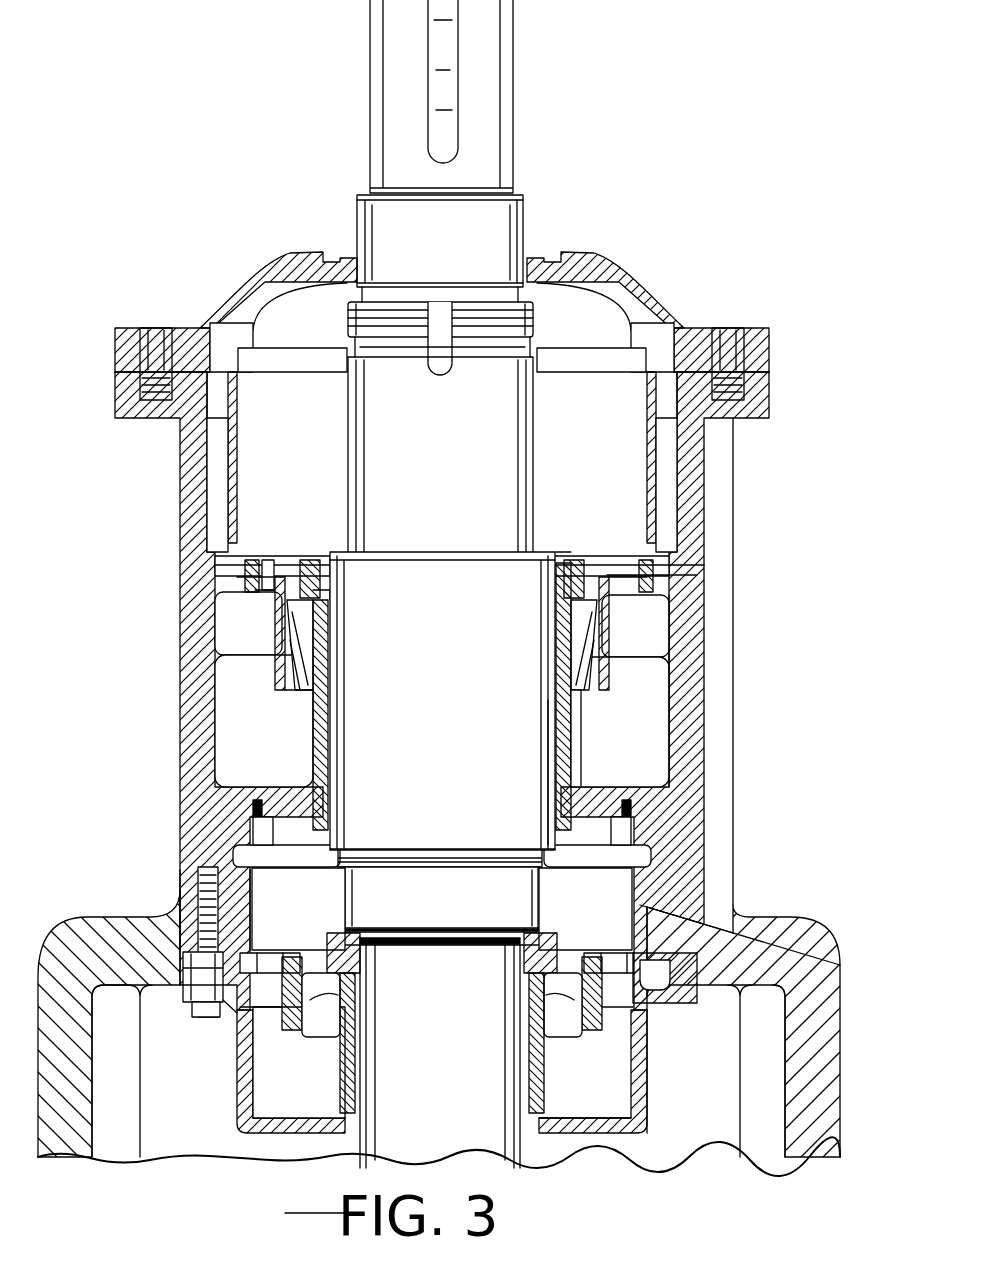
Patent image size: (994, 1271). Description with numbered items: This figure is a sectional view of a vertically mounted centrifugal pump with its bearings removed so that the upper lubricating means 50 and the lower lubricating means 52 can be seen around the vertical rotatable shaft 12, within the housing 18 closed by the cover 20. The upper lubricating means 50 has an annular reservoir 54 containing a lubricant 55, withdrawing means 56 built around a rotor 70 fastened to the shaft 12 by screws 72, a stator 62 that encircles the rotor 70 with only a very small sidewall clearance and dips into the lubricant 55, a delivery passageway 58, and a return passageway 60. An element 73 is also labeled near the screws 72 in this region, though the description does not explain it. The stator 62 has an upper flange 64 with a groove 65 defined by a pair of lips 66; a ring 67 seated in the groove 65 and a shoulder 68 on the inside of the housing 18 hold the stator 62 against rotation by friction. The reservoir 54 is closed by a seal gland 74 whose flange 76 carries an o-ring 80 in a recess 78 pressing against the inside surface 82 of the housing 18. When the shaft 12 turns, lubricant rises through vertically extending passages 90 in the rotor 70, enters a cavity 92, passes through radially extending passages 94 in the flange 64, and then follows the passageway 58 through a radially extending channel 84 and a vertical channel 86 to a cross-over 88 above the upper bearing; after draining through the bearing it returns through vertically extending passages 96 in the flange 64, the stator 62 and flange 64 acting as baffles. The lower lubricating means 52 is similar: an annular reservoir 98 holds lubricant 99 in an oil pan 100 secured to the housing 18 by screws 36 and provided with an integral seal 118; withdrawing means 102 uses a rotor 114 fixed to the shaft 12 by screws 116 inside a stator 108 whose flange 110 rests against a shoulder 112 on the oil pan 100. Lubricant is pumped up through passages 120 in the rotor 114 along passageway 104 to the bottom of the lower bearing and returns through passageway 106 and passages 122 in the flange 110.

The shaft 12 is at (455, 716).
The housing 18 is at (757, 402).
The cover 20 is at (262, 283).
The screws 36 is at (210, 1020).
The upper lubricating means 50 is at (200, 575).
The lower lubricating means 52 is at (268, 933).
The annular reservoir 54 is at (645, 705).
The lubricant 55 is at (225, 672).
The withdrawing means 56 is at (665, 628).
The passageway 58 is at (663, 508).
The passageway 60 is at (215, 477).
The stator 62 is at (275, 684).
The upper flange 64 is at (290, 547).
The groove 65 is at (245, 568).
The lips 66 is at (247, 562).
The ring 67 is at (262, 590).
The shoulder 68 is at (262, 580).
The rotor 70 is at (290, 688).
The screws 72 is at (606, 612).
The seal ring 73 is at (612, 595).
The seal gland 74 is at (553, 733).
The flange 76 is at (588, 785).
The recess 78 is at (624, 800).
The o-ring 80 is at (257, 810).
The inside surface 82 is at (278, 838).
The radially extending channel 84 is at (690, 563).
The vertical channel 86 is at (217, 427).
The cross-over 88 is at (222, 358).
The vertically extending passages 90 is at (292, 612).
The cavity 92 is at (335, 566).
The radially extending passages 94 is at (647, 552).
The vertically extending passages 96 is at (265, 558).
The annular reservoir 98 is at (592, 1103).
The lubricant 99 is at (357, 983).
The oil pan 100 is at (640, 1135).
The withdrawing means 102 is at (641, 1075).
The passageway 104 is at (607, 910).
The passageway 106 is at (277, 942).
The stator 108 is at (285, 1030).
The flange 110 is at (727, 920).
The shoulder 112 is at (683, 1005).
The rotor 114 is at (581, 1038).
The screws 116 is at (560, 930).
The integral seal 118 is at (355, 1050).
The passages 120 is at (315, 915).
The passages 122 is at (237, 1003).